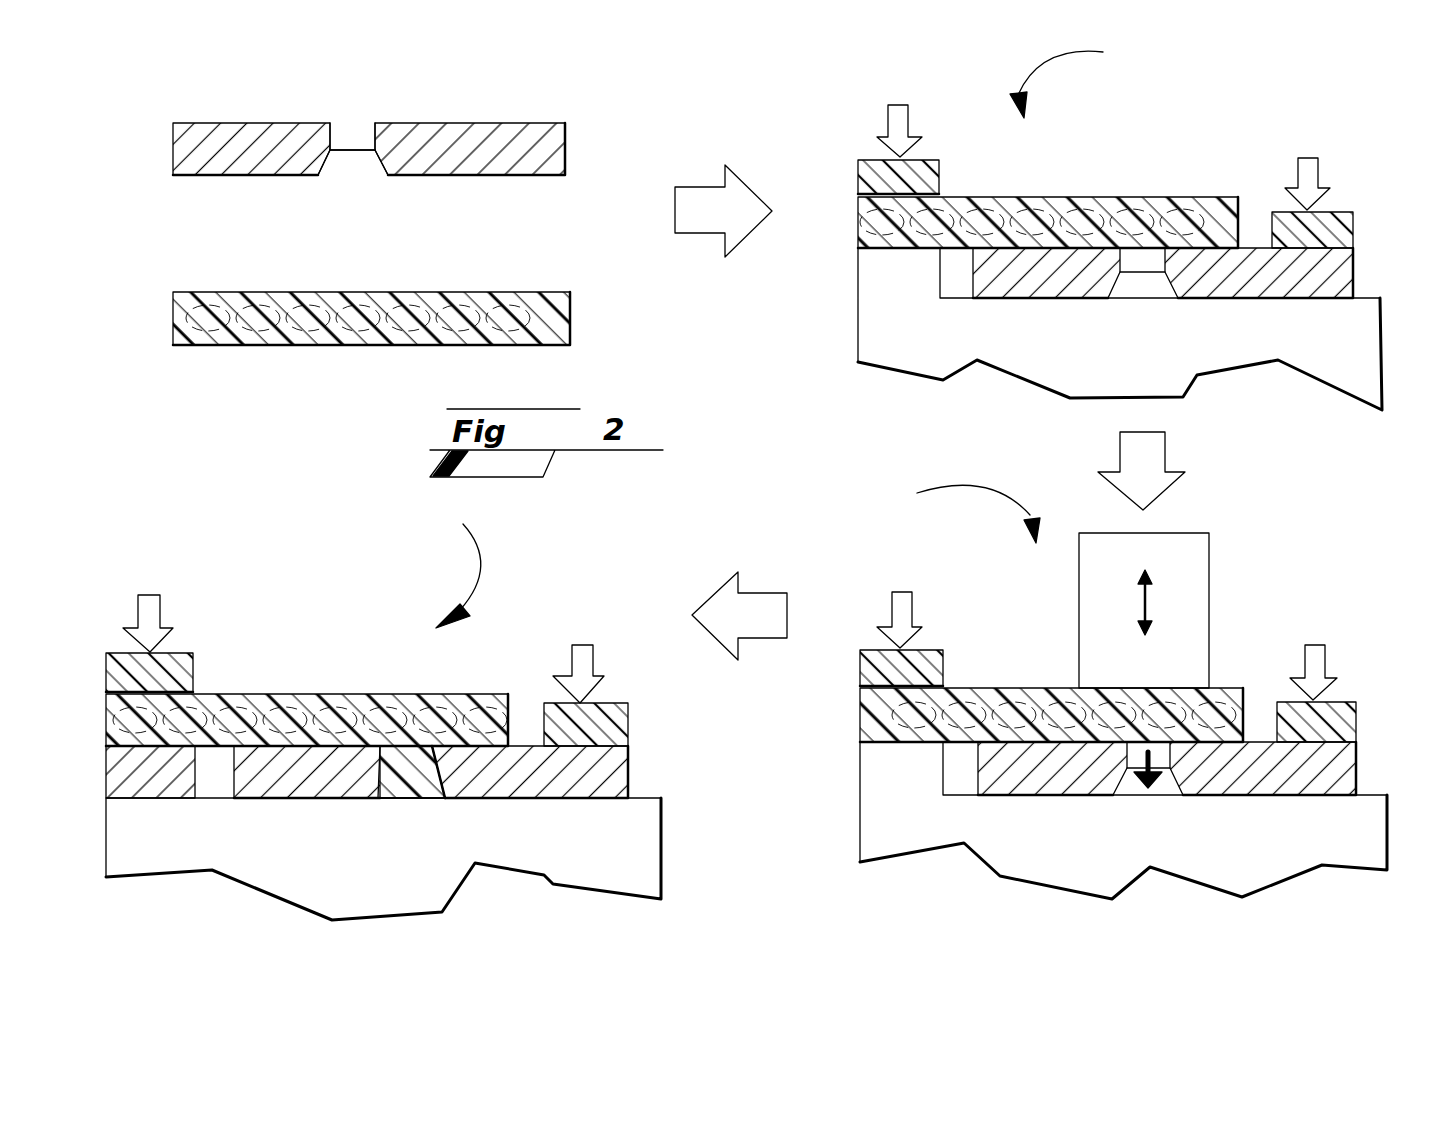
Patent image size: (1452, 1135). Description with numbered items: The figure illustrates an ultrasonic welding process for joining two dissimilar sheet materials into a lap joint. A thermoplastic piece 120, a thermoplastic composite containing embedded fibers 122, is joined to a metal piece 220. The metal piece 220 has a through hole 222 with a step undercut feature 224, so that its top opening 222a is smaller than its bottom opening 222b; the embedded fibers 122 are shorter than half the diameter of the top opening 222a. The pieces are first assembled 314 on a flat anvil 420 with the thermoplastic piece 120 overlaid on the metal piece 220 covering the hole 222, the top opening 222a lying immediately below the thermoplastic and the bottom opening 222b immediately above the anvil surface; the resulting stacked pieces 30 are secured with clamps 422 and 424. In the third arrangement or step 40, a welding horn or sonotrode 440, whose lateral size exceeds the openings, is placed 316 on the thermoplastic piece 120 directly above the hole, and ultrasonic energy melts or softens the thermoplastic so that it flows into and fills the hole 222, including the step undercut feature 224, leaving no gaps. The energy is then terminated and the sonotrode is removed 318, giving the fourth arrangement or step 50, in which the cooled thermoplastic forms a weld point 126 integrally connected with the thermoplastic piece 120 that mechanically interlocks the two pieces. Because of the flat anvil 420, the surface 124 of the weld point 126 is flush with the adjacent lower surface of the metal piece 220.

The stacked pieces 30 is at (1082, 77).
The third arrangement or step 40 is at (956, 512).
The fourth arrangement or step 50 is at (451, 567).
The thermoplastic piece 120 is at (570, 313).
The embedded fibers 122 is at (488, 312).
The surface of the weld point 124 is at (388, 800).
The weld point 126 is at (412, 805).
The metal piece 220 is at (513, 130).
The through hole 222 is at (353, 150).
The top opening 222a is at (343, 124).
The bottom opening 222b is at (350, 177).
The step undercut feature 224 is at (370, 178).
The assembling step 314 is at (692, 190).
The placing step 316 is at (1153, 442).
The sonotrode removal step 318 is at (760, 604).
The flat anvil 420 is at (1018, 368).
The clamp 422 is at (1355, 233).
The clamp 424 is at (858, 180).
The welding horn or sonotrode 440 is at (1212, 560).